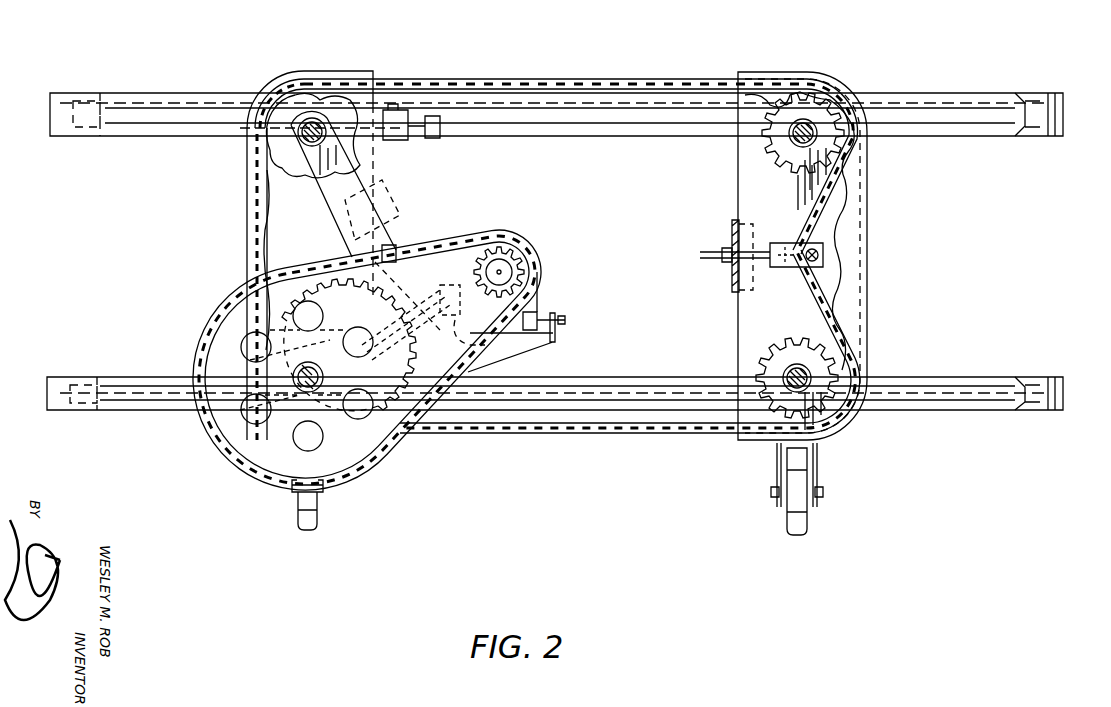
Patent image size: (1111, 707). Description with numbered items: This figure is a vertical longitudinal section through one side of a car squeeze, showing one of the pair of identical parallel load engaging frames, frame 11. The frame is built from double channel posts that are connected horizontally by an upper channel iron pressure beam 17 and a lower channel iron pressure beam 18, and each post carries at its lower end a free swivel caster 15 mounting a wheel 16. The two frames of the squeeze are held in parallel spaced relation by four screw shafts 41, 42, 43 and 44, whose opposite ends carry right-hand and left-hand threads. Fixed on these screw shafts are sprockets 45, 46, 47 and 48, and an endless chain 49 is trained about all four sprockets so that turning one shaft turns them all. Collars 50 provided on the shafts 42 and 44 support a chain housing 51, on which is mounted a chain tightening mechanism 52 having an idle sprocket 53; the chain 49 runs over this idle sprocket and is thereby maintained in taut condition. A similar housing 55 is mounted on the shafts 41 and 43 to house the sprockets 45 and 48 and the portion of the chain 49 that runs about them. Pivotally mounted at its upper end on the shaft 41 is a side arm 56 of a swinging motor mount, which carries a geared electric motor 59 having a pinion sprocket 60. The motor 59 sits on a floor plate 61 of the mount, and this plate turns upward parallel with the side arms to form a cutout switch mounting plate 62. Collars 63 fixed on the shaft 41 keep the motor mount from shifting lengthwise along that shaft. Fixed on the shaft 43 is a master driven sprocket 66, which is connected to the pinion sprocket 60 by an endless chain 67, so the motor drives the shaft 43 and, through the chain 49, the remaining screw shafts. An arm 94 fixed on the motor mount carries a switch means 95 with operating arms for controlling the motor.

The load engaging frame 11 is at (930, 95).
The free swivel caster 15 is at (820, 470).
The wheel 16 is at (318, 519).
The upper channel iron pressure beam 17 is at (995, 97).
The lower channel iron pressure beam 18 is at (970, 395).
The screw shaft 41 is at (290, 130).
The screw shaft 42 is at (765, 137).
The screw shaft 43 is at (306, 364).
The screw shaft 44 is at (783, 376).
The sprocket 45 is at (283, 157).
The sprocket 46 is at (782, 110).
The sprocket 47 is at (848, 366).
The sprocket 48 is at (290, 328).
The endless chain 49 is at (622, 80).
The collar 50 is at (790, 133).
The chain housing 51 is at (832, 75).
The chain tightening mechanism 52 is at (776, 240).
The idle sprocket 53 is at (827, 243).
The housing 55 is at (278, 82).
The side arm 56 is at (374, 218).
The geared electric motor 59 is at (533, 258).
The pinion sprocket 60 is at (483, 244).
The floor plate 61 is at (512, 337).
The cutout switch mounting plate 62 is at (415, 292).
The collar 63 is at (300, 105).
The master driven sprocket 66 is at (410, 432).
The endless chain 67 is at (446, 388).
The arm 94 is at (400, 140).
The switch means 95 is at (426, 140).